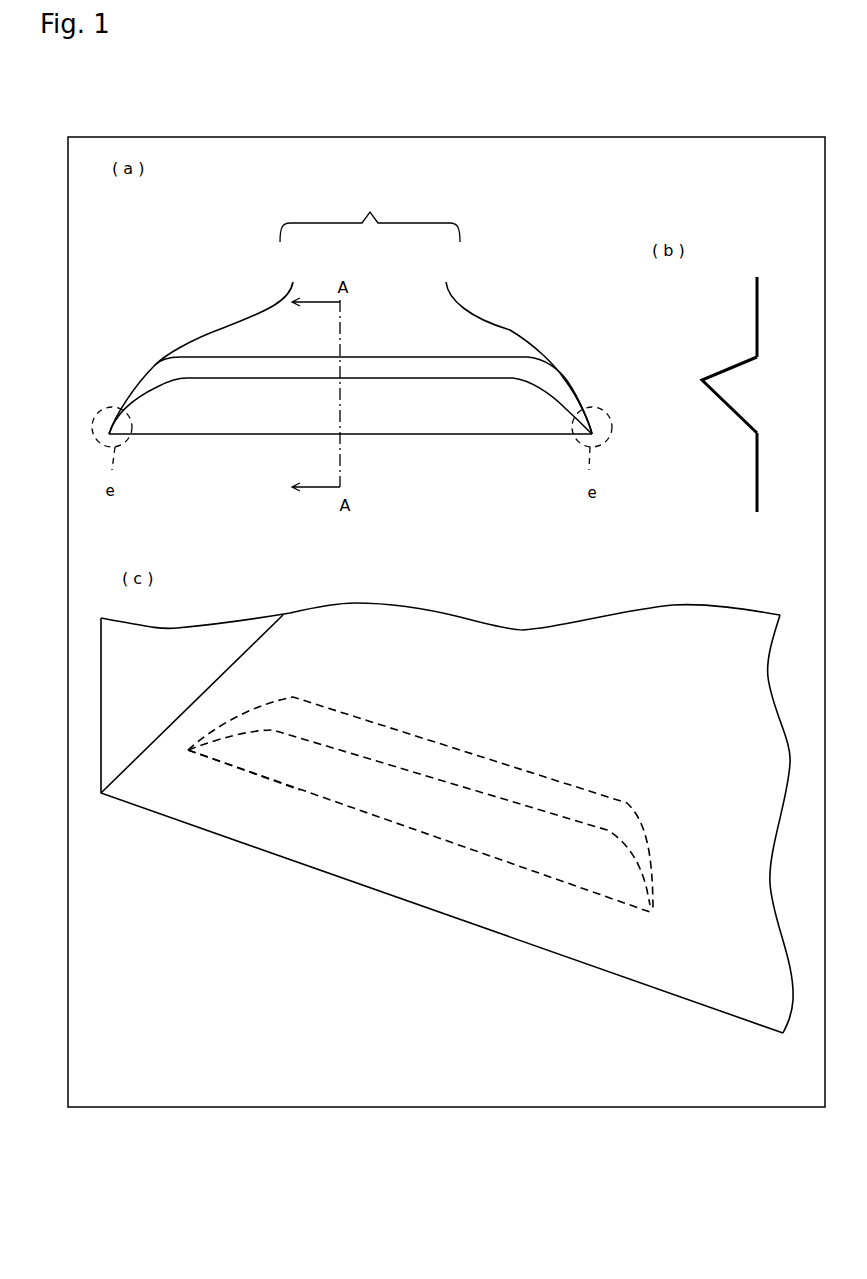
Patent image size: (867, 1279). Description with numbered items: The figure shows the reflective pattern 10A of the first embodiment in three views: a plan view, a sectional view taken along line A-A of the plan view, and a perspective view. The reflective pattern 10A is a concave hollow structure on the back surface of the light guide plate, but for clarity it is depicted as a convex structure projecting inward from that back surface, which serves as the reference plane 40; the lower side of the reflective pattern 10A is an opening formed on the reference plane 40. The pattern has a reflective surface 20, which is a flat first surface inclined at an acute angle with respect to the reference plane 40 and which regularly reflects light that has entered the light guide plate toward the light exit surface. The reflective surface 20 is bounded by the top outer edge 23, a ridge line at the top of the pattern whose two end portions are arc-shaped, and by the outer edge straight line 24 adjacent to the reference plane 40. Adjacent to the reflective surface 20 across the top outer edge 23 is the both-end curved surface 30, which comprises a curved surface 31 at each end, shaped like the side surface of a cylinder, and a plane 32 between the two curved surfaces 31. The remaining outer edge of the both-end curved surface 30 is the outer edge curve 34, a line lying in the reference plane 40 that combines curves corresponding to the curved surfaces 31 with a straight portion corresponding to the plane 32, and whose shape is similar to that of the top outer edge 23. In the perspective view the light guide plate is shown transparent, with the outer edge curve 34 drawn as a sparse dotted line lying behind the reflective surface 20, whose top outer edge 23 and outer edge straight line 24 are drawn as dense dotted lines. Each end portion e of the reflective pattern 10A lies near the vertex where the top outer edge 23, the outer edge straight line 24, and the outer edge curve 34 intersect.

The reflective pattern 10A is at (570, 309).
The reflective surface 20 is at (470, 420).
The top outer edge 23 is at (217, 380).
The outer edge straight line 24 is at (252, 436).
The both-end curved surface 30 is at (370, 210).
The curved surface 31 is at (293, 282).
The plane 32 is at (383, 370).
The outer edge curve 34 is at (567, 378).
The reference plane 40 is at (200, 850).